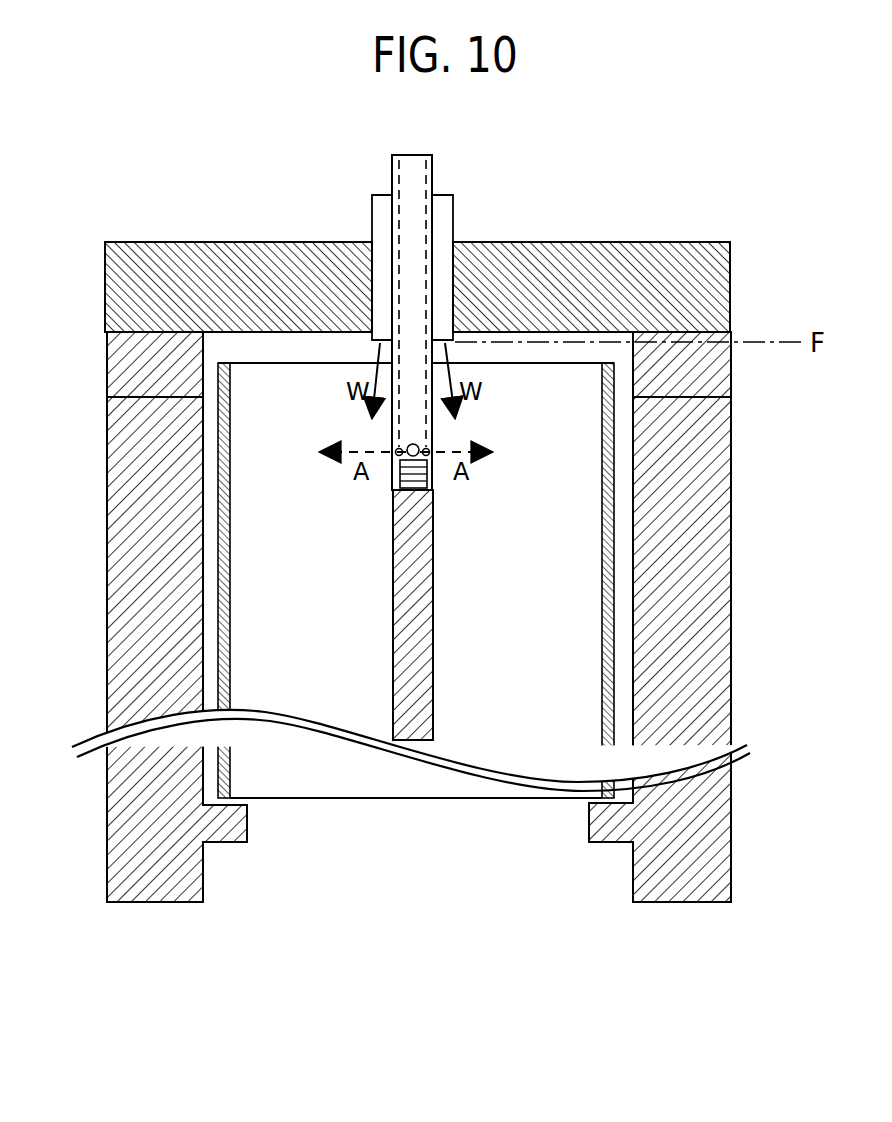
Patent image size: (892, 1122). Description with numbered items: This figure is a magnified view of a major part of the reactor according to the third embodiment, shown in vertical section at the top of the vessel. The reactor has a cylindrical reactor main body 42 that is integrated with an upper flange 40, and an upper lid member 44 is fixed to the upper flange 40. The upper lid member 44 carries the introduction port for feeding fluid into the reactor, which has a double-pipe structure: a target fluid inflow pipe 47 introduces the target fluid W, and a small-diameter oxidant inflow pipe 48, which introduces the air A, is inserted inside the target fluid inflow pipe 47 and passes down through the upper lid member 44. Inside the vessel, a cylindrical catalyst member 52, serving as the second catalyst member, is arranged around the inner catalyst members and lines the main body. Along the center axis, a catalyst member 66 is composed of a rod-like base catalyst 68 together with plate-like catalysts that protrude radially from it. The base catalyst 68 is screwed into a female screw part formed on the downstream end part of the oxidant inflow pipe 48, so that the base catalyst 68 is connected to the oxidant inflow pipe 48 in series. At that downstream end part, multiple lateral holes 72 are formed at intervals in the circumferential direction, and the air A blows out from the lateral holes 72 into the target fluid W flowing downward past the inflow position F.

The upper flange 40 is at (107, 378).
The reactor main body 42 is at (731, 540).
The upper lid member 44 is at (730, 268).
The target fluid inflow pipe 47 is at (372, 214).
The oxidant inflow pipe 48 is at (433, 172).
The catalyst member 52 is at (603, 540).
The catalyst member 66 is at (378, 561).
The base catalyst 68 is at (433, 645).
The lateral holes 72 is at (418, 456).